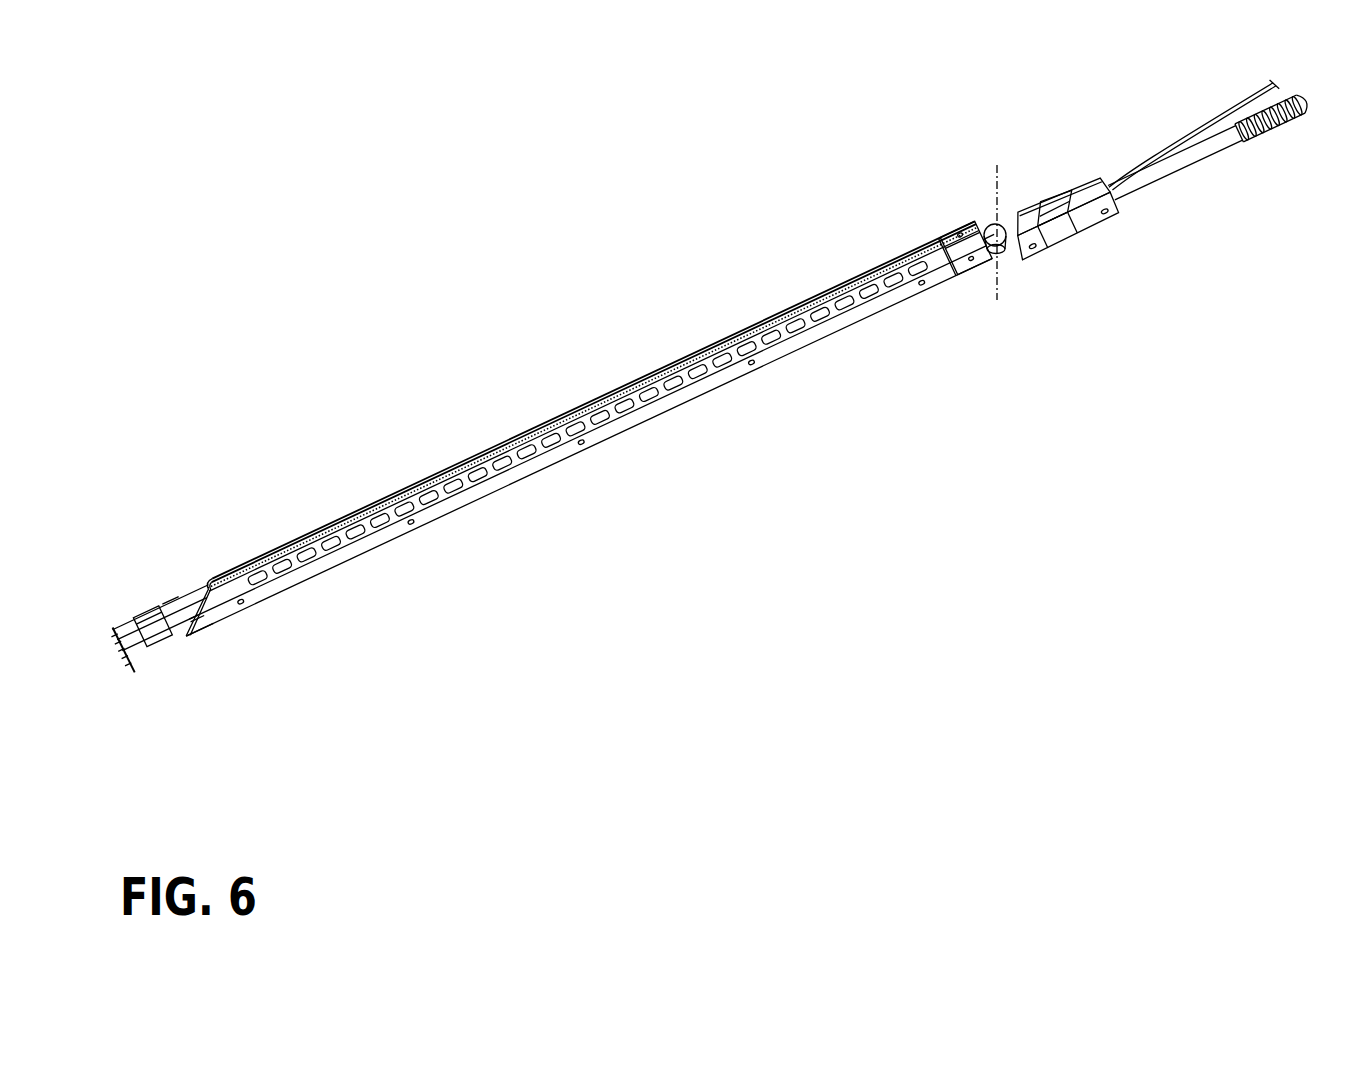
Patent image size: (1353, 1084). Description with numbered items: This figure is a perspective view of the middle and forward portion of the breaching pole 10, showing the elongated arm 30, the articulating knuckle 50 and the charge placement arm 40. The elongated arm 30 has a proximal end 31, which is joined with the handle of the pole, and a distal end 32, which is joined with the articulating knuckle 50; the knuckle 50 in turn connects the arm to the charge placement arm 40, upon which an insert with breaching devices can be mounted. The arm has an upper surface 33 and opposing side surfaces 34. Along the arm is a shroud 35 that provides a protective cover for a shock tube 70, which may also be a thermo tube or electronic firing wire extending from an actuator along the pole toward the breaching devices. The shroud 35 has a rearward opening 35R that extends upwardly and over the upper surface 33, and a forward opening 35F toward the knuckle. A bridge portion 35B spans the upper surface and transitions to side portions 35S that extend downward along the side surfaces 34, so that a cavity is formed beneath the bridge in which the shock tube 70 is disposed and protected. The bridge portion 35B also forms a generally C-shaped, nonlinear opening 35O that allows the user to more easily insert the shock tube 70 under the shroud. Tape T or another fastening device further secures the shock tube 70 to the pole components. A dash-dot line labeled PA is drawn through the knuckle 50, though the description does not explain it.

The breaching pole 10 is at (724, 290).
The elongated arm 30 is at (541, 483).
The proximal end 31 is at (188, 638).
The distal end 32 is at (956, 232).
The upper surface 33 is at (195, 578).
The side surfaces 34 is at (165, 595).
The shroud 35 is at (620, 386).
The bridge portion 35B is at (497, 446).
The side portions 35S is at (402, 505).
The rearward opening 35R is at (203, 575).
The opening 35O is at (248, 610).
The forward opening 35F is at (934, 243).
The charge placement arm 40 is at (1115, 225).
The articulating knuckle 50 is at (1010, 265).
The shock tube 70 is at (128, 622).
The pivot axis PA is at (1000, 165).
The tape T is at (1055, 205).